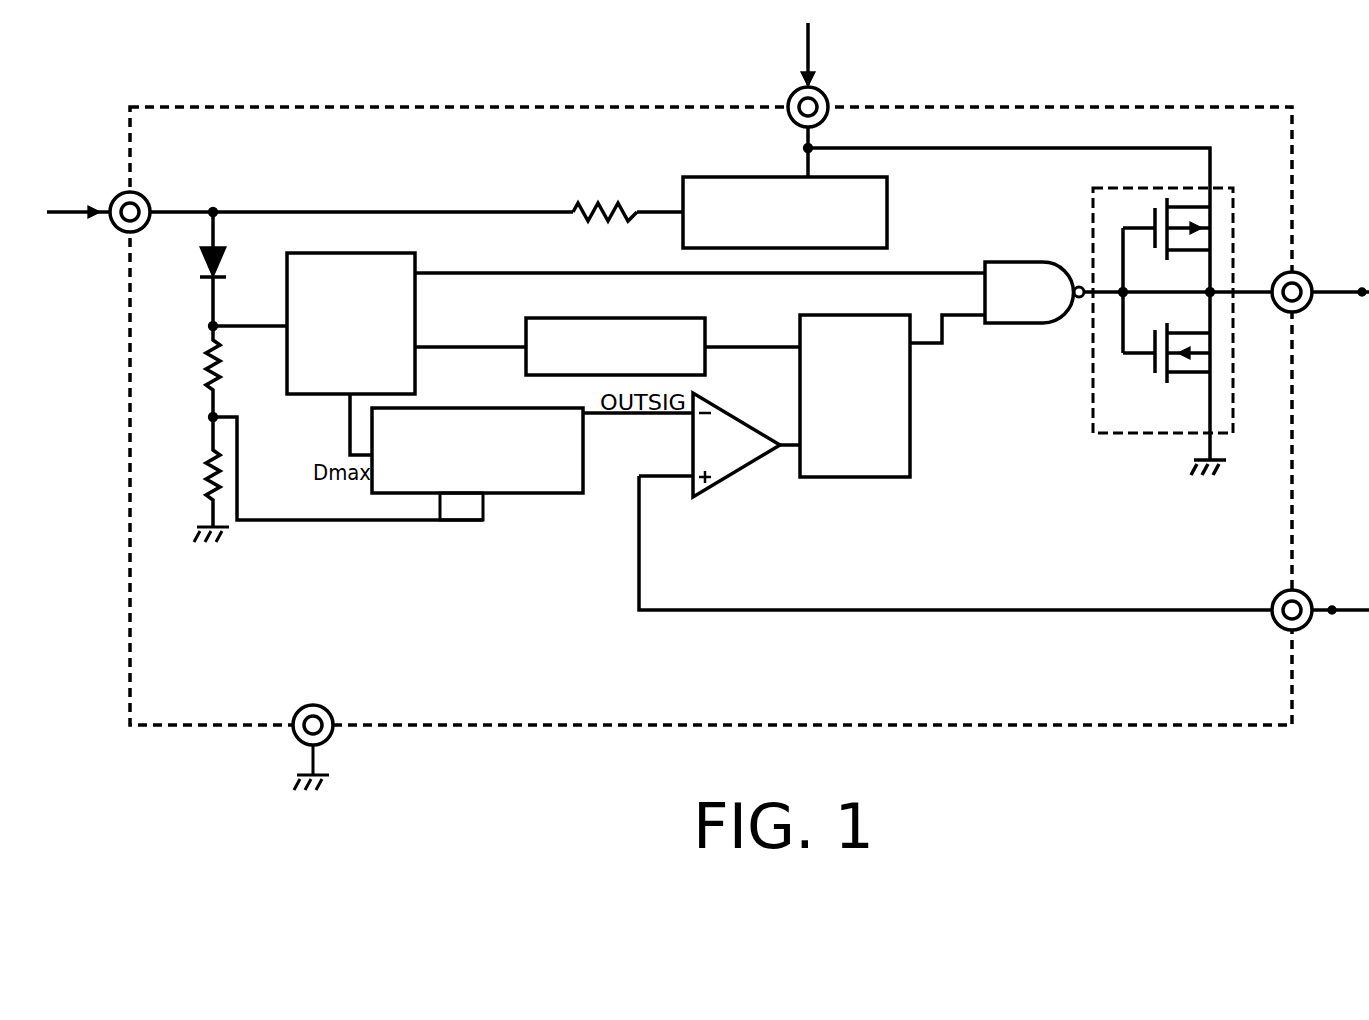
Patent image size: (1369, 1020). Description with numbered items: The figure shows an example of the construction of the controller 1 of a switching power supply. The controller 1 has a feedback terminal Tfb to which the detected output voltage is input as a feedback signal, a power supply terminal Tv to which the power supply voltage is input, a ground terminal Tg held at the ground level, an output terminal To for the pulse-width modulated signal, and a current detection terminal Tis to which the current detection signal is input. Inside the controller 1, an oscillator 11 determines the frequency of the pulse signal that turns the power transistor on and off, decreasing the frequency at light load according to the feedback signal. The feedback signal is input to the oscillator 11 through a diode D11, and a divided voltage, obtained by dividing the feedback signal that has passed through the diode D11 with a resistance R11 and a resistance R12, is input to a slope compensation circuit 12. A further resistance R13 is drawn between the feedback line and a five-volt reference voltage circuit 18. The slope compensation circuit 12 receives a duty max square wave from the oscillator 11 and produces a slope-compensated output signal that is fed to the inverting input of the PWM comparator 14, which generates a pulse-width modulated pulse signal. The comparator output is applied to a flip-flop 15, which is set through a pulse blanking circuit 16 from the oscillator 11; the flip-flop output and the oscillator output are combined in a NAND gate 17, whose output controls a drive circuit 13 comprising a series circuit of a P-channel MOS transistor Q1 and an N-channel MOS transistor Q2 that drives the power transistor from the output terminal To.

The controller 1 is at (988, 108).
The oscillator 11 is at (282, 262).
The slope compensation circuit 12 is at (470, 408).
The drive circuit 13 is at (1185, 347).
The PWM comparator 14 is at (733, 411).
The flip-flop 15 is at (912, 421).
The pulse blanking circuit 16 is at (627, 313).
The NAND gate 17 is at (1000, 252).
The 5V-reference voltage circuit 18 is at (889, 214).
The P-channel MOS transistor Q1 is at (1222, 228).
The N-channel MOS transistor Q2 is at (1222, 352).
The diode D11 is at (193, 285).
The resistance R11 is at (205, 475).
The resistance R12 is at (205, 375).
The resistor R13 is at (606, 198).
The feedback terminal Tfb is at (116, 232).
The power supply terminal Tv is at (795, 92).
The output terminal To is at (1306, 310).
The current detection terminal Tis is at (1308, 628).
The ground terminal Tg is at (297, 745).